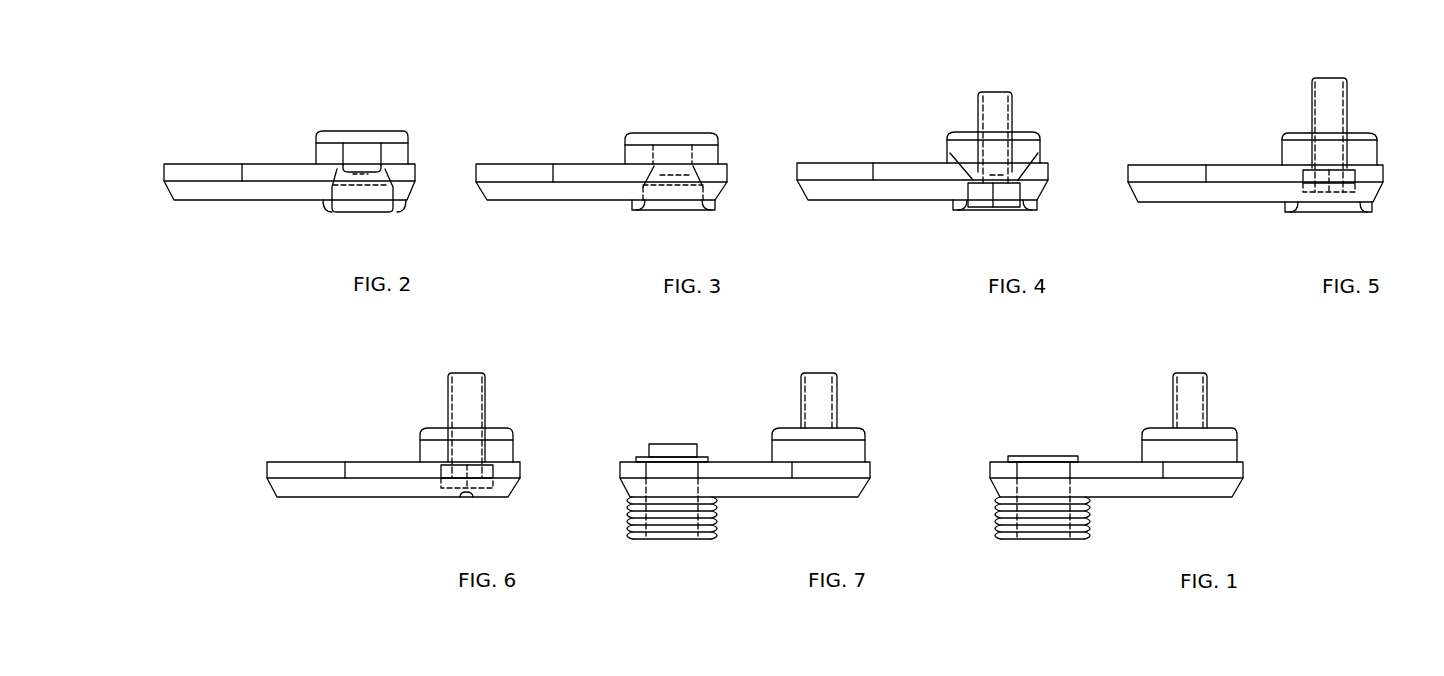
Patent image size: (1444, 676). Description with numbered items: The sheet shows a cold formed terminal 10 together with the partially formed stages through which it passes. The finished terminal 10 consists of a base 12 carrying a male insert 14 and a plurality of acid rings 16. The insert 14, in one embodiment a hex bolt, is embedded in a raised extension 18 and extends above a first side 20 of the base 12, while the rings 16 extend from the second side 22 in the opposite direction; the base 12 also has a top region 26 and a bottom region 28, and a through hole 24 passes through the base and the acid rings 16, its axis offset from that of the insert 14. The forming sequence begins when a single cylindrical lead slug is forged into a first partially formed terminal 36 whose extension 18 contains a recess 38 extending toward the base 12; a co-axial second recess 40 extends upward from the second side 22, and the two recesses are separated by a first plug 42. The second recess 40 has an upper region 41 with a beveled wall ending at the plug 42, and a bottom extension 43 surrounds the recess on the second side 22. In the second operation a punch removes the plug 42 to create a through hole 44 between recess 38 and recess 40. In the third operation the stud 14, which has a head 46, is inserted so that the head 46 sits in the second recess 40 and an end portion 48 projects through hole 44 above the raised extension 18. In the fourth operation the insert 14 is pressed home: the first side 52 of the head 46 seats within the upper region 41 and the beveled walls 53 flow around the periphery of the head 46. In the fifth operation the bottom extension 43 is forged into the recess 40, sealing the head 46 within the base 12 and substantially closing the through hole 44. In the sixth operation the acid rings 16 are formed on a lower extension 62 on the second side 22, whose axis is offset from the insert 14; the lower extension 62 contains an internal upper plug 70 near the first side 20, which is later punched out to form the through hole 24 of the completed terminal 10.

In FIG. 1, the cold formed terminal 10 is at (1265, 468).
In FIG. 2, the base 12 is at (187, 162).
In FIG. 1, the base 12 is at (1103, 460).
In FIG. 4, the insert 14 is at (980, 120).
In FIG. 5, the insert 14 is at (1312, 103).
In FIG. 6, the insert 14 is at (448, 398).
In FIG. 7, the insert 14 is at (800, 400).
In FIG. 1, the insert 14 is at (1172, 402).
In FIG. 7, the acid rings 16 is at (718, 515).
In FIG. 1, the acid rings 16 is at (1090, 515).
In FIG. 2, the raised extension 18 is at (412, 148).
In FIG. 1, the raised extension 18 is at (1238, 450).
In FIG. 2, the first side 20 is at (223, 162).
In FIG. 1, the first side 20 is at (997, 457).
In FIG. 2, the second side 22 is at (230, 200).
In FIG. 1, the second side 22 is at (1158, 498).
In FIG. 1, the through hole 24 is at (1042, 465).
In FIG. 1, the top region 26 is at (1235, 472).
In FIG. 1, the bottom region 28 is at (1193, 488).
In FIG. 2, the first partially formed terminal 36 is at (148, 193).
In FIG. 2, the recess 38 is at (362, 130).
In FIG. 2, the second recess 40 is at (362, 207).
In FIG. 2, the upper region 41 is at (385, 178).
In FIG. 3, the upper region 41 is at (675, 178).
In FIG. 2, the first plug 42 is at (362, 168).
In FIG. 2, the bottom extension 43 is at (323, 203).
In FIG. 5, the bottom extension 43 is at (1370, 212).
In FIG. 3, the through hole 44 is at (672, 132).
In FIG. 4, the head 46 is at (982, 197).
In FIG. 5, the head 46 is at (1315, 190).
In FIG. 4, the end portion 48 is at (997, 92).
In FIG. 4, the first side of head 52 is at (970, 178).
In FIG. 3, the beveled walls 53 is at (697, 177).
In FIG. 4, the beveled walls 53 is at (1020, 178).
In FIG. 7, the lower extension 62 is at (627, 517).
In FIG. 7, the internal upper plug 70 is at (673, 442).